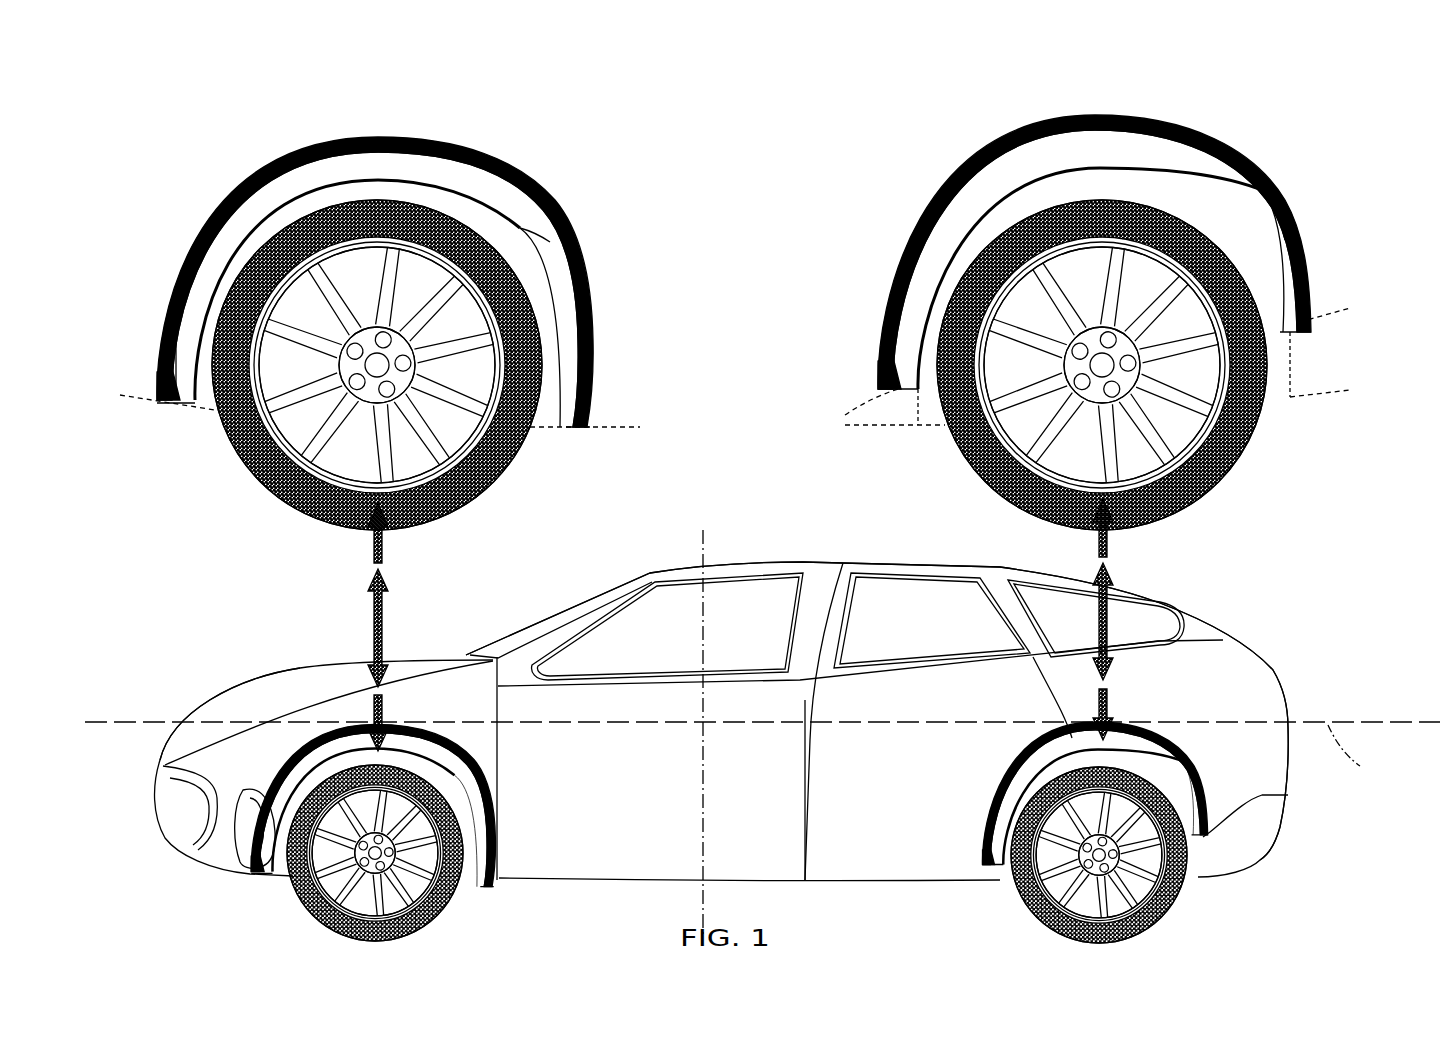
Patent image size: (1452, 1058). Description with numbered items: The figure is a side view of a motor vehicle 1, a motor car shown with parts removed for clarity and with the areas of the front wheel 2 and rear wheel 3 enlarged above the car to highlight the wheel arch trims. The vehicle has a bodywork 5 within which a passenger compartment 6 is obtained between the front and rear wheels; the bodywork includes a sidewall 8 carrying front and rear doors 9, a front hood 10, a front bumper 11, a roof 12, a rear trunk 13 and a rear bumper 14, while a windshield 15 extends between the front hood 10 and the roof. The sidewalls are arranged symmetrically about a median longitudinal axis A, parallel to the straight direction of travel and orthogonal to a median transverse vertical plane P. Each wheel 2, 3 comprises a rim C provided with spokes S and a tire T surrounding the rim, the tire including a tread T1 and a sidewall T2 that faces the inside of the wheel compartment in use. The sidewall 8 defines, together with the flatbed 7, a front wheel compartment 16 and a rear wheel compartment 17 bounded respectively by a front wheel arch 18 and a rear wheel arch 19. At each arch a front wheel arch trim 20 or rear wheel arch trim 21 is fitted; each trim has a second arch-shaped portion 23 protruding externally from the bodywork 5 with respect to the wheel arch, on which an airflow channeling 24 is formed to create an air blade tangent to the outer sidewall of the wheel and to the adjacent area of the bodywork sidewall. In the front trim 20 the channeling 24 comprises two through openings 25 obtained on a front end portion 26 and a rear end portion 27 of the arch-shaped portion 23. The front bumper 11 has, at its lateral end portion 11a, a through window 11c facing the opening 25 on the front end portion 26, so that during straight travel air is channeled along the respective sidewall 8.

The motor vehicle 1 is at (686, 548).
The front wheel 2 is at (288, 518).
The rear wheel 3 is at (1255, 464).
The bodywork 5 is at (849, 553).
The passenger compartment 6 is at (896, 611).
The flatbed 7 is at (621, 892).
The sidewall 8 is at (257, 708).
The door 9 is at (591, 850).
The front hood 10 is at (289, 669).
The front bumper 11 is at (158, 797).
The lateral end portion 11a is at (222, 843).
The through window 11c is at (208, 823).
The roof 12 is at (805, 563).
The rear trunk 13 is at (1215, 621).
The rear bumper 14 is at (1274, 838).
The windshield 15 is at (570, 612).
The front wheel compartment 16 is at (497, 233).
The rear wheel compartment 17 is at (1224, 231).
The front wheel arch 18 is at (539, 171).
The rear wheel arch 19 is at (1247, 149).
The front wheel arch trim 20 is at (246, 204).
The rear wheel arch trim 21 is at (1085, 735).
The second arch-shaped portion 23 is at (457, 176).
The airflow channeling 24 is at (169, 270).
The through opening 25 is at (168, 318).
The front end portion 26 is at (185, 360).
The rear end portion 27 is at (568, 333).
The tire T is at (230, 457).
The spoke S is at (400, 262).
The rim C is at (414, 349).
The tread T1 is at (356, 194).
The sidewall T2 is at (325, 222).
The median transverse vertical plane P is at (712, 612).
The median longitudinal axis A is at (1353, 754).